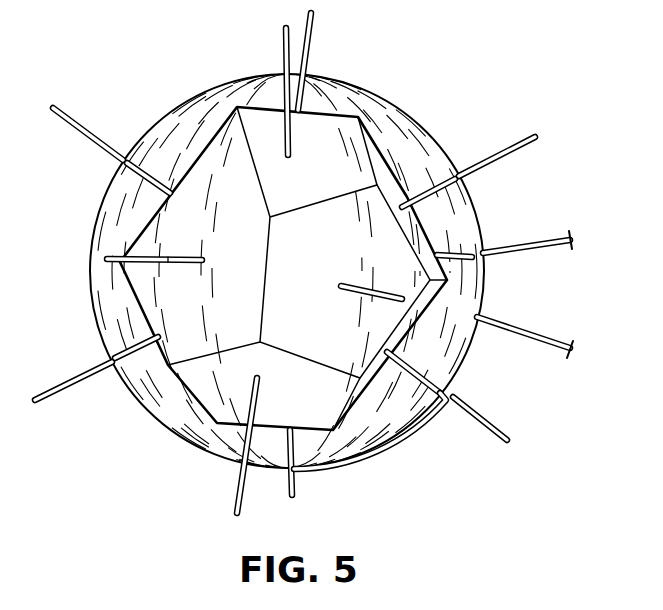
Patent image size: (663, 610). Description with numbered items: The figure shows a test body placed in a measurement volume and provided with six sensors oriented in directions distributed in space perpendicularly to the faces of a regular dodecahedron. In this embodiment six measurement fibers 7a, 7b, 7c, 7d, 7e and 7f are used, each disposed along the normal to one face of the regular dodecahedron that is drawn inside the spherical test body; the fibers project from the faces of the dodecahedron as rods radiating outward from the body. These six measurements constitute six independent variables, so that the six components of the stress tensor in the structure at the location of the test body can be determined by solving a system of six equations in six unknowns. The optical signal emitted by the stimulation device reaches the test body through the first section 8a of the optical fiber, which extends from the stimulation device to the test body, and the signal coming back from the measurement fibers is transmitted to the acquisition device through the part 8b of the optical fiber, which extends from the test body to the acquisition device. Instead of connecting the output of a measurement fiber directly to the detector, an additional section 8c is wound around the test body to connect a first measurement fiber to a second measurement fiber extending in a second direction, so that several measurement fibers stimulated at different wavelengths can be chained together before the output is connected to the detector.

The measurement fiber 7a is at (283, 50).
The measurement fiber 7b is at (127, 265).
The measurement fiber 7c is at (238, 490).
The measurement fiber 7d is at (62, 392).
The measurement fiber 7e is at (75, 132).
The measurement fiber 7f is at (395, 303).
The first section of optical fiber 8a is at (537, 252).
The part of optical fiber 8b is at (533, 342).
The additional section of optical fiber 8c is at (405, 445).